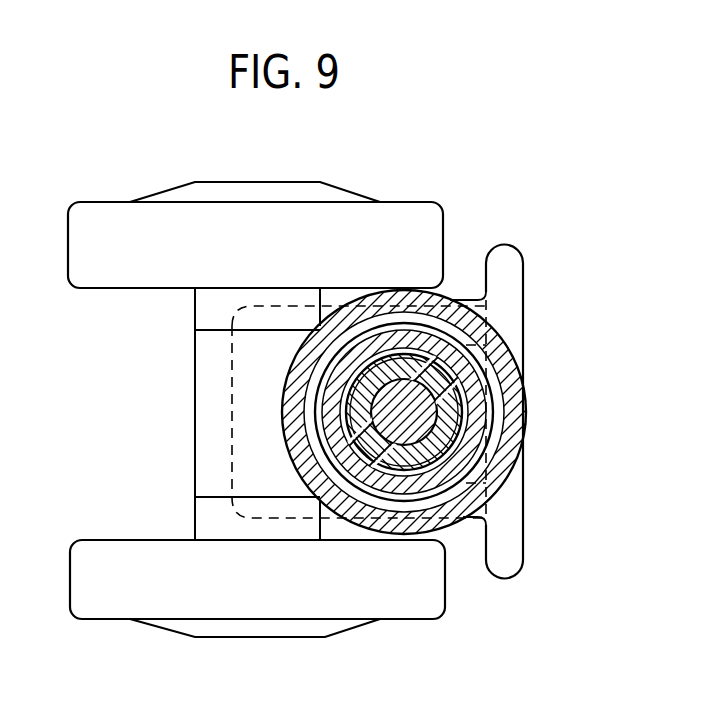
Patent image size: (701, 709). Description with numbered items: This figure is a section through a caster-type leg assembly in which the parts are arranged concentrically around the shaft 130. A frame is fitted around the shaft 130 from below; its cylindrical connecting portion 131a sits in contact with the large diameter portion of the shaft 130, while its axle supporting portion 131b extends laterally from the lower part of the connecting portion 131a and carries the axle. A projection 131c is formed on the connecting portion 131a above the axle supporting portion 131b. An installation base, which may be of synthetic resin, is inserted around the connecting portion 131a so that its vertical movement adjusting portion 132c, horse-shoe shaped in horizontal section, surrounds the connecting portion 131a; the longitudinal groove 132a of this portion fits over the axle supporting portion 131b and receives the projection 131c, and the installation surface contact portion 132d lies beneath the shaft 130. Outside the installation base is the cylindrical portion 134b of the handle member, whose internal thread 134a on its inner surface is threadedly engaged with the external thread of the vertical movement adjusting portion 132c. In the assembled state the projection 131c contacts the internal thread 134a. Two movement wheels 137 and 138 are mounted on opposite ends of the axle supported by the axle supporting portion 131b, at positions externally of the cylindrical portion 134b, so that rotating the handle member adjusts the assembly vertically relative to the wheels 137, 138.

The shaft 130 is at (383, 405).
The connecting portion 131a is at (486, 456).
The axle supporting portion 131b is at (206, 399).
The projection 131c is at (338, 416).
The longitudinal groove 132a is at (352, 480).
The vertical movement adjusting portion 132c is at (470, 372).
The installation surface contact portion 132d is at (262, 522).
The internal thread 134a is at (335, 372).
The cylindrical portion 134b is at (448, 298).
The movement wheel 137 is at (92, 213).
The movement wheel 138 is at (100, 619).